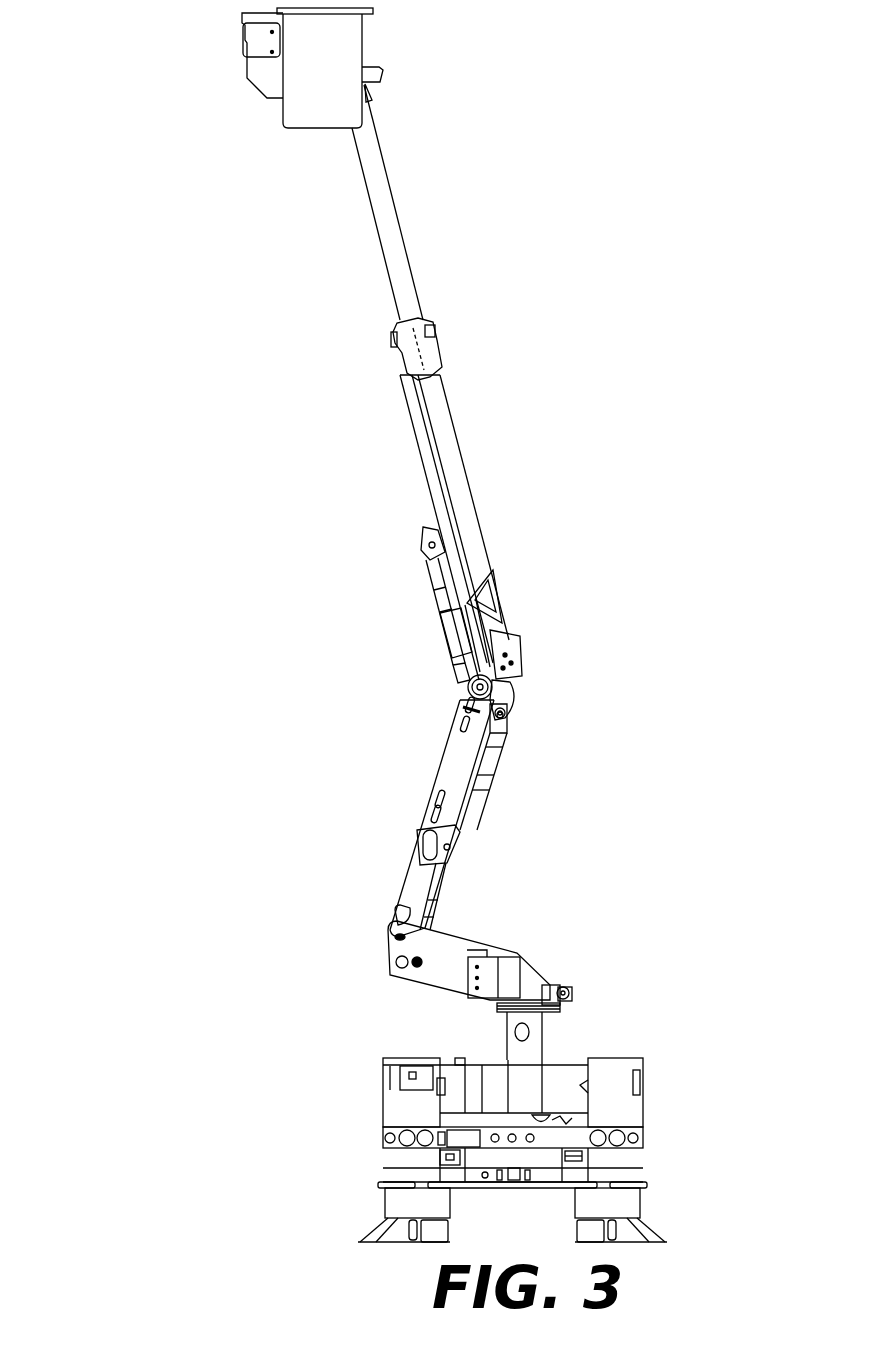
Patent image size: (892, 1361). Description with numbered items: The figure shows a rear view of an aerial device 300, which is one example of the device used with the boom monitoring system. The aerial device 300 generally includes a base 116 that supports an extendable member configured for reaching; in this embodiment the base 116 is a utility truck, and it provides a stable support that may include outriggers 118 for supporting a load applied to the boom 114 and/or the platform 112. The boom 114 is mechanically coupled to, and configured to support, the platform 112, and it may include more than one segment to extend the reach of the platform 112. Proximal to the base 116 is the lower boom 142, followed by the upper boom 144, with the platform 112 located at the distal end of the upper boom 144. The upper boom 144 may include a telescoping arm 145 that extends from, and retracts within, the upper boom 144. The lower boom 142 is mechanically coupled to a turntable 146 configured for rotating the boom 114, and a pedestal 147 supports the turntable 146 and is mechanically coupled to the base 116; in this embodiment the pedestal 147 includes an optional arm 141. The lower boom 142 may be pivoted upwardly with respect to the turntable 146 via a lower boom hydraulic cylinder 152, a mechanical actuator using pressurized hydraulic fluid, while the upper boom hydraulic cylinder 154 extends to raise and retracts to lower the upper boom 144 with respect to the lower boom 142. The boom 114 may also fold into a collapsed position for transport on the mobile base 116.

The aerial device 300 is at (120, 56).
The platform 112 is at (343, 45).
The boom 114 is at (744, 463).
The base 116 is at (673, 1112).
The outriggers 118 is at (378, 1225).
The arm 141 is at (442, 975).
The lower boom 142 is at (455, 773).
The upper boom 144 is at (458, 483).
The telescoping arm 145 is at (388, 243).
The turntable 146 is at (568, 1008).
The pedestal 147 is at (540, 1050).
The lower boom hydraulic cylinder 152 is at (468, 805).
The upper boom hydraulic cylinder 154 is at (452, 637).